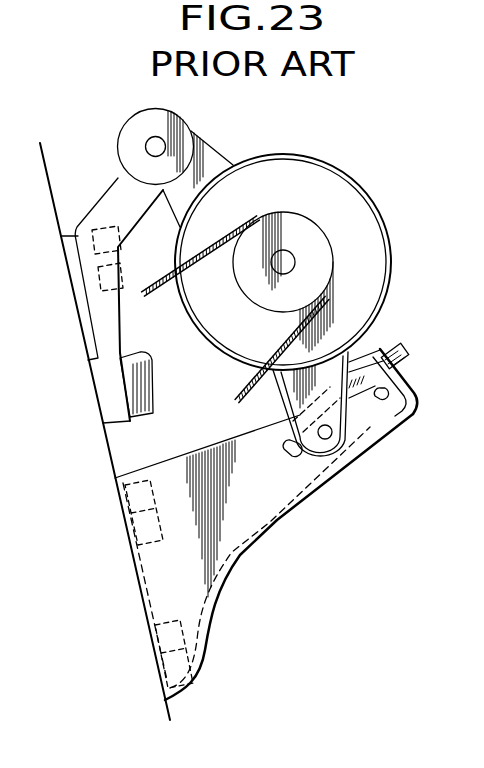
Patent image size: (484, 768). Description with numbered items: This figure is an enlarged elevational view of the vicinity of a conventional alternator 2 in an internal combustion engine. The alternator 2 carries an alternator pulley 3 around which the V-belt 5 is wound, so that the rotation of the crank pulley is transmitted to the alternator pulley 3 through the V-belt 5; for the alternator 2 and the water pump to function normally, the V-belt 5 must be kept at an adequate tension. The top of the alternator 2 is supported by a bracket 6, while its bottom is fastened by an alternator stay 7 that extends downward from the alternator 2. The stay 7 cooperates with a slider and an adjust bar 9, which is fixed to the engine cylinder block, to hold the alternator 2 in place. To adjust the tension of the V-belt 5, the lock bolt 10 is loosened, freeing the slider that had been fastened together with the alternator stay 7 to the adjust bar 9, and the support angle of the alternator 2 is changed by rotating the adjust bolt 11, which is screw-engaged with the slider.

The alternator 2 is at (368, 193).
The alternator pulley 3 is at (323, 254).
The V-belt 5 is at (249, 390).
The bracket 6 is at (214, 157).
The alternator stay 7 is at (284, 402).
The adjust bar 9 is at (277, 520).
The lock bolt 10 is at (331, 440).
The adjust bolt 11 is at (404, 352).